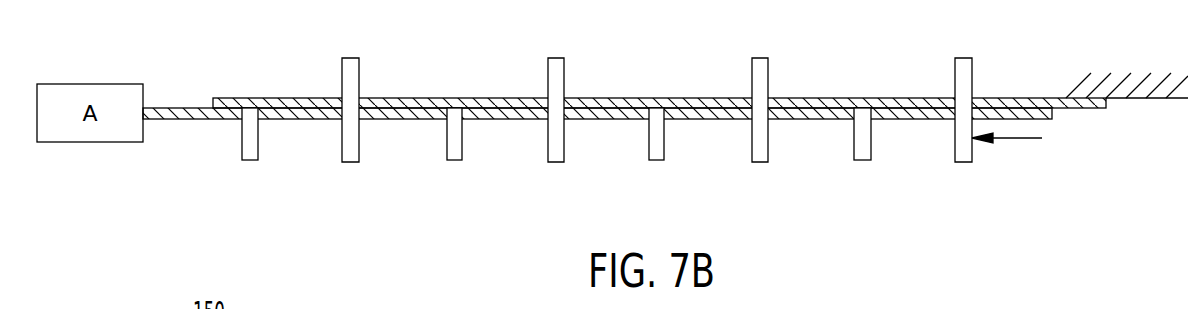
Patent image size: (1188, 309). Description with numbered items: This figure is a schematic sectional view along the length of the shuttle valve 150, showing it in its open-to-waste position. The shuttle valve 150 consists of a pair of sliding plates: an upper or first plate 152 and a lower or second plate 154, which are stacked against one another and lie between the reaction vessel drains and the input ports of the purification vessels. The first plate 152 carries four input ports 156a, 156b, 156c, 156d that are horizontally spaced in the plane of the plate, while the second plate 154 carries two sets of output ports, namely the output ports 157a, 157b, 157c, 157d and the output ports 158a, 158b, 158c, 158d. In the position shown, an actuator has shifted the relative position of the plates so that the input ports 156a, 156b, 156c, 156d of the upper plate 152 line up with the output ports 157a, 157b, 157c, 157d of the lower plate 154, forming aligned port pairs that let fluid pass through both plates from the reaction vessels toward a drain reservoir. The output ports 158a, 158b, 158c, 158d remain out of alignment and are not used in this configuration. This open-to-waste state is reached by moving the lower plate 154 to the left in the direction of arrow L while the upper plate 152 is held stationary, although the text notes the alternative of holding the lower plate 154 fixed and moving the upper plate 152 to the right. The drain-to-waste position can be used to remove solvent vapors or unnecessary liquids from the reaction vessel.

The shuttle valve 150 is at (254, 77).
The first plate 152 is at (887, 96).
The second plate 154 is at (192, 116).
The port 156a is at (351, 73).
The port 156b is at (557, 73).
The port 156c is at (761, 73).
The port 156d is at (964, 73).
The output port 157a is at (350, 160).
The output port 157b is at (556, 160).
The output port 157c is at (760, 160).
The output port 157d is at (963, 160).
The output port 158a is at (249, 158).
The output port 158b is at (456, 158).
The output port 158c is at (655, 158).
The output port 158d is at (862, 158).
The arrow L is at (1010, 140).